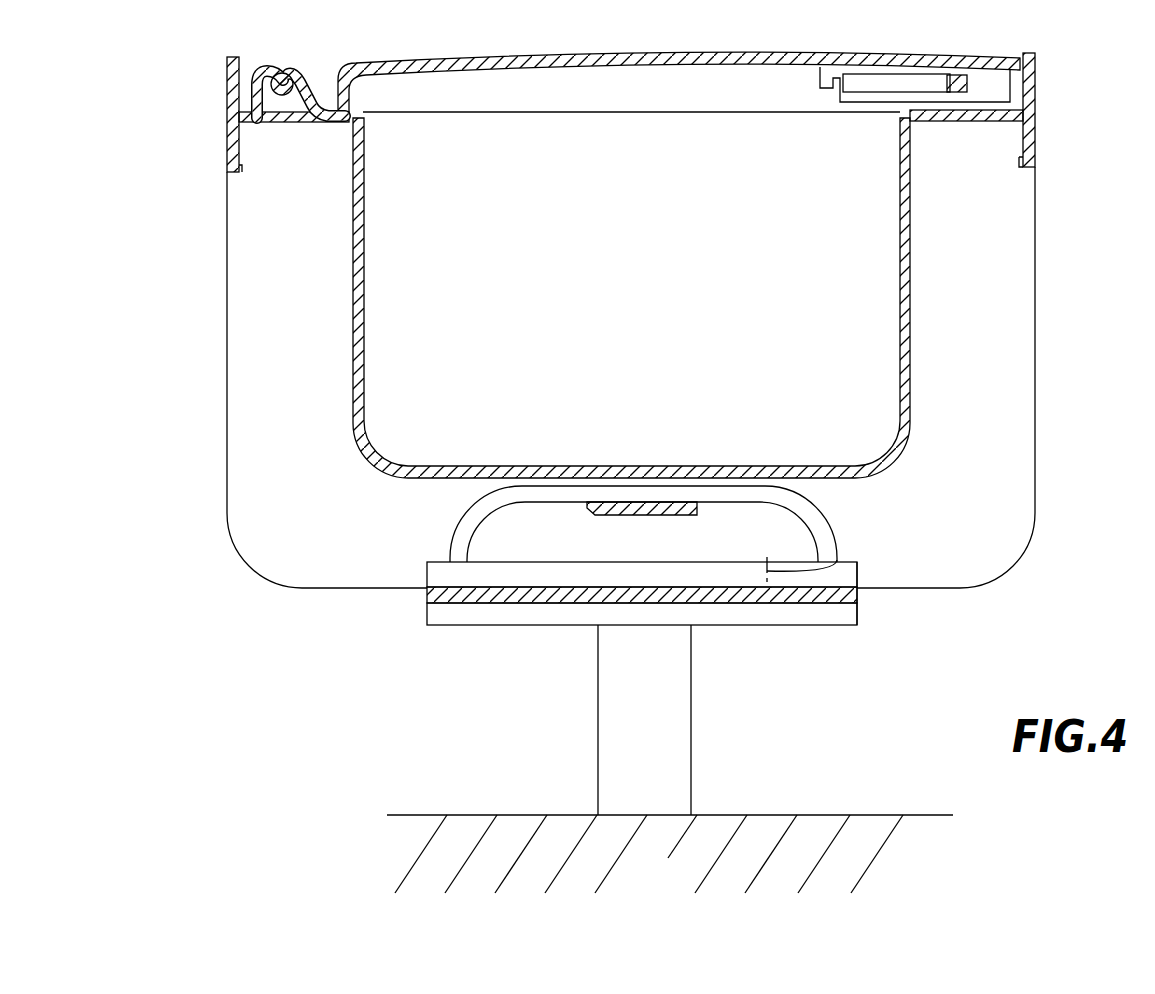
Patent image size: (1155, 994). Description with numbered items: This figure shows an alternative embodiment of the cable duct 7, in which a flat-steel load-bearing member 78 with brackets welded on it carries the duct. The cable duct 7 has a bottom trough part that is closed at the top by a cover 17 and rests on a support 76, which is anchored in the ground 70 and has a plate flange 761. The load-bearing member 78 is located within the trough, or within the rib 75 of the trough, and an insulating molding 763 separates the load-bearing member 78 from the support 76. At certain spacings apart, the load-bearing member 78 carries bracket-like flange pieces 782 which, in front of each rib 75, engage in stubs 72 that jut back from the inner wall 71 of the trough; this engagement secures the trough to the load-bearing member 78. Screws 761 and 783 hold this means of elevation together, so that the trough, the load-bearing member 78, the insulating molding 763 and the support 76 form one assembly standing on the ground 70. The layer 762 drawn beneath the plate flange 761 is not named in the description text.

The cable duct 7 is at (607, 353).
The cover 17 is at (761, 59).
The ground 70 is at (672, 890).
The inner wall 71 is at (898, 292).
The stubs 72 is at (684, 508).
The rib 75 is at (1002, 281).
The support 76 is at (617, 702).
The load-bearing member 78 is at (661, 622).
The plate flange 761 is at (546, 597).
The base plate 762 is at (840, 608).
The insulating molding 763 is at (858, 592).
The bracket-like flange pieces 782 is at (764, 495).
The screws 783 is at (838, 560).